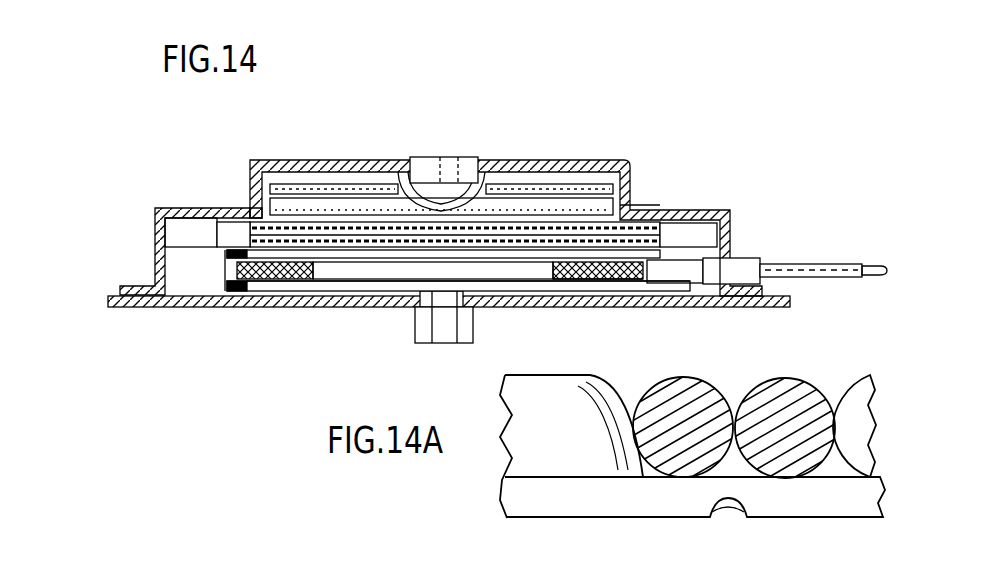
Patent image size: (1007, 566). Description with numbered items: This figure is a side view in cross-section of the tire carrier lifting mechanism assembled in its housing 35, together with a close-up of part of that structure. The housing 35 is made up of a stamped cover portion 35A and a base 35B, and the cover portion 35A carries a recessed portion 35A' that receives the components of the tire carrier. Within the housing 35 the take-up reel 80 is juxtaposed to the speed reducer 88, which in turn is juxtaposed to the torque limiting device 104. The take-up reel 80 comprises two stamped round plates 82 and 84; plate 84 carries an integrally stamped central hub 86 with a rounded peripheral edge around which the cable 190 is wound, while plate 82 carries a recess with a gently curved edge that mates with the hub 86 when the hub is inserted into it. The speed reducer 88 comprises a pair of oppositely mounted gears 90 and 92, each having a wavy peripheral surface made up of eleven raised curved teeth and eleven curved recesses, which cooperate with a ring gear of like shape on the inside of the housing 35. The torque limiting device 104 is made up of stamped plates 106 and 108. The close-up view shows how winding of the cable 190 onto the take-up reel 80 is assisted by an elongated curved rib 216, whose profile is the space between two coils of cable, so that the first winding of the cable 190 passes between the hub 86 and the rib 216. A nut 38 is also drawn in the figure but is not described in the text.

In FIG. 14, the housing 35 is at (313, 163).
In FIG. 14, the cover portion 35A is at (185, 211).
In FIG. 14, the recessed portion 35A' is at (167, 185).
In FIG. 14, the base 35B is at (350, 303).
In FIG. 14, the nut 38 is at (467, 160).
In FIG. 14, the take-up reel 80 is at (218, 274).
In FIG. 14, the round plate 82 is at (233, 262).
In FIG. 14, the round plate 84 is at (268, 302).
In FIG. 14A, the round plate 84 is at (853, 517).
In FIG. 14A, the central hub 86 is at (577, 457).
In FIG. 14, the speed reducer 88 is at (730, 242).
In FIG. 14, the gear 90 is at (733, 258).
In FIG. 14, the gear 92 is at (645, 207).
In FIG. 14, the torque limiting device 104 is at (612, 190).
In FIG. 14, the stamped plate 106 is at (563, 210).
In FIG. 14, the stamped plate 108 is at (550, 195).
In FIG. 14, the cable 190 is at (620, 283).
In FIG. 14A, the cable 190 is at (728, 400).
In FIG. 14, the elongated curved rib 216 is at (587, 280).
In FIG. 14A, the elongated curved rib 216 is at (732, 468).